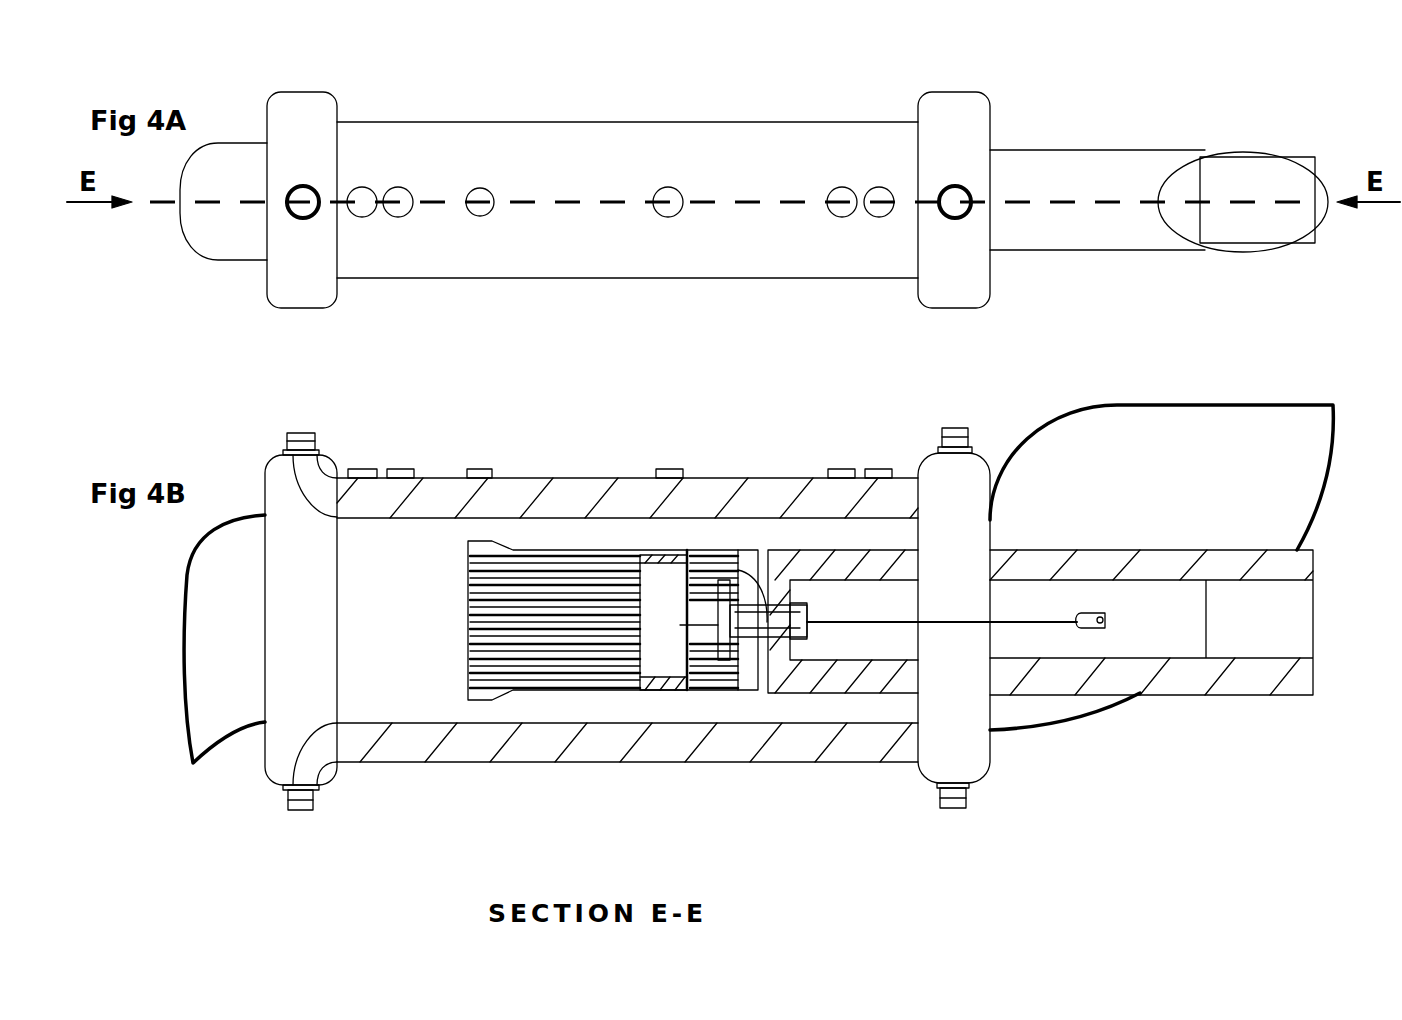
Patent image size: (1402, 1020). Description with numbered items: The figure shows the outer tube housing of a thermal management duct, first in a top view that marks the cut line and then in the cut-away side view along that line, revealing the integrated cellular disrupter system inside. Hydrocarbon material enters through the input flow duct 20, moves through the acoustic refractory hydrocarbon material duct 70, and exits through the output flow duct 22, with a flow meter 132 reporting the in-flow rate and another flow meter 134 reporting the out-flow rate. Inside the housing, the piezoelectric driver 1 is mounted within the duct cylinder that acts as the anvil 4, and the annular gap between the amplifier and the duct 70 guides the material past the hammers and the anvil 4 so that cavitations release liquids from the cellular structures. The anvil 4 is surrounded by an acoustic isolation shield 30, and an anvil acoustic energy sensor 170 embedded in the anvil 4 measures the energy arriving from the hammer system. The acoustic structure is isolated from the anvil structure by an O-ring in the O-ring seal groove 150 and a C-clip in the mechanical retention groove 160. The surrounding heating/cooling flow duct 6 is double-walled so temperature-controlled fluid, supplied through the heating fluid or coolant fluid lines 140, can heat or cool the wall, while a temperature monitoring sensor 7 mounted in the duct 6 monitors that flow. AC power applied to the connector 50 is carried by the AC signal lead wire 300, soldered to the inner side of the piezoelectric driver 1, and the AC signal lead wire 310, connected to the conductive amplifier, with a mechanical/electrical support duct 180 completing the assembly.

In FIG. 4B, the piezoelectric driver 1 is at (650, 670).
In FIG. 4B, the anvil 4 is at (477, 725).
In FIG. 4B, the heating/cooling flow duct 6 is at (385, 747).
In FIG. 4A, the temperature monitoring sensor 7 is at (668, 187).
In FIG. 4B, the temperature monitoring sensor 7 is at (668, 462).
In FIG. 4A, the input flow duct 20 is at (1185, 218).
In FIG. 4B, the input flow duct 20 is at (1273, 437).
In FIG. 4A, the output flow duct 22 is at (170, 217).
In FIG. 4B, the output flow duct 22 is at (173, 622).
In FIG. 4B, the acoustic isolation shield 30 is at (537, 763).
In FIG. 4B, the connector 50 is at (1113, 622).
In FIG. 4B, the acoustic refractory hydrocarbon material duct 70 is at (637, 528).
In FIG. 4A, the flow meter 132 is at (877, 187).
In FIG. 4B, the flow meter 132 is at (875, 468).
In FIG. 4A, the flow meter 134 is at (399, 178).
In FIG. 4B, the flow meter 134 is at (398, 460).
In FIG. 4A, the heating fluid or coolant fluid lines 140 is at (293, 222).
In FIG. 4B, the heating fluid or coolant fluid lines 140 is at (292, 422).
In FIG. 4B, the O-ring seal groove 150 is at (780, 640).
In FIG. 4B, the mechanical retention groove 160 is at (797, 632).
In FIG. 4A, the anvil acoustic energy sensor 170 is at (481, 187).
In FIG. 4B, the anvil acoustic energy sensor 170 is at (480, 462).
In FIG. 4A, the mechanical/electrical support duct 180 is at (1323, 230).
In FIG. 4B, the mechanical/electrical support duct 180 is at (1320, 623).
In FIG. 4B, the AC signal lead wire 300 is at (680, 632).
In FIG. 4B, the AC signal lead wire 310 is at (745, 575).